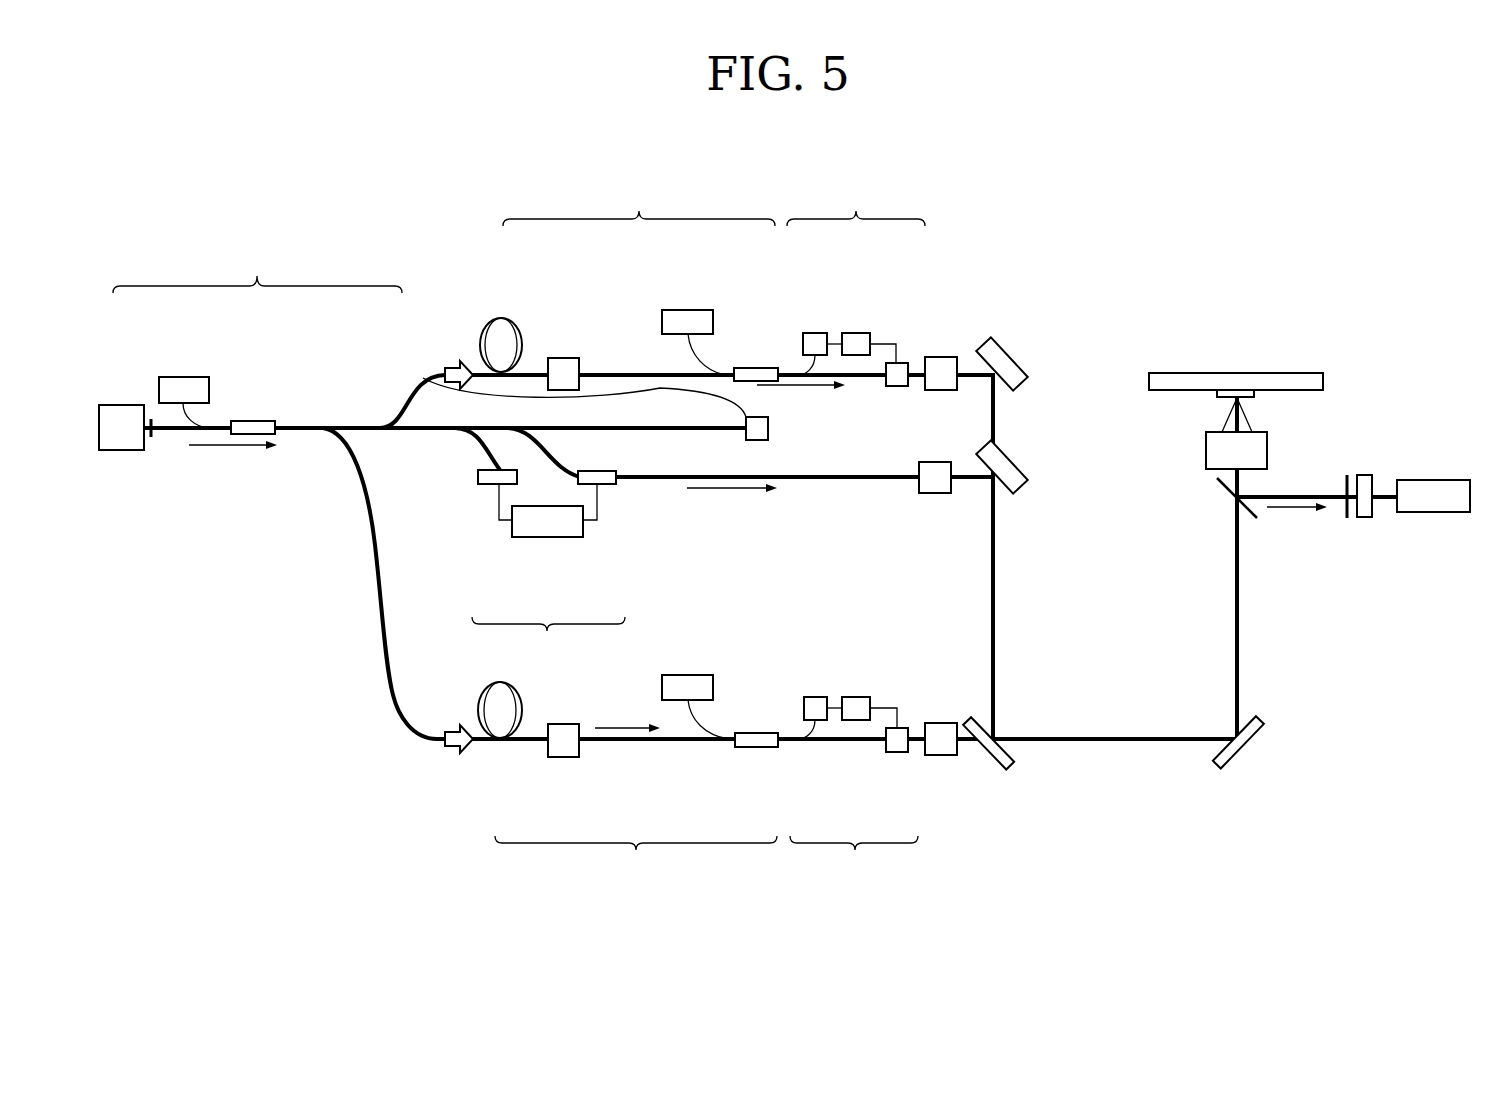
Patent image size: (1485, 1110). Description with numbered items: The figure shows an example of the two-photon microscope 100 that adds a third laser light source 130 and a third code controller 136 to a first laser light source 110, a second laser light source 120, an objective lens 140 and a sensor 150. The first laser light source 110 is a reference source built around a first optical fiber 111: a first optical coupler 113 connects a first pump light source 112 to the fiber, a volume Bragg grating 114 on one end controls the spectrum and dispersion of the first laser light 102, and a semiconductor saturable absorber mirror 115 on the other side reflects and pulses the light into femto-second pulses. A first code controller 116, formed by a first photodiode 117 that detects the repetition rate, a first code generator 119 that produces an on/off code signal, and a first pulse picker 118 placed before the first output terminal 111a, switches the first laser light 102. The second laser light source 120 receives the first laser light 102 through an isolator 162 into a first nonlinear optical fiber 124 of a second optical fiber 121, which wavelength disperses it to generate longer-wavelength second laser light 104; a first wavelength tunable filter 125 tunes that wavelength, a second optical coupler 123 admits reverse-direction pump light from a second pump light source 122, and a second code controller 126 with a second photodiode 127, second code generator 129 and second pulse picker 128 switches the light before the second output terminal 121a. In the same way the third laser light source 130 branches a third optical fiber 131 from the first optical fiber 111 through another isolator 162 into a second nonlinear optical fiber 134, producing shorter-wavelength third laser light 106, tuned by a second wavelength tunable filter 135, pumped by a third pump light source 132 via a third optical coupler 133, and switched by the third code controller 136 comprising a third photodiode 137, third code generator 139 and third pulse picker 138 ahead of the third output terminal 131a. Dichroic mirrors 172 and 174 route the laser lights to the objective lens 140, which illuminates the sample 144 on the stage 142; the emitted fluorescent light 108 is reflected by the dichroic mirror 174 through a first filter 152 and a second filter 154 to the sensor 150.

The two-photon microscope 100 is at (1348, 178).
The first laser light 102 is at (483, 481).
The second laser light 104 is at (801, 399).
The third laser light 106 is at (627, 715).
The fluorescent light 108 is at (1297, 521).
The first laser light source 110 is at (257, 271).
The first optical fiber 111 is at (298, 426).
The first output terminal 111a is at (933, 494).
The first pump light source 112 is at (183, 377).
The first optical coupler 113 is at (253, 421).
The volume Bragg grating 114 is at (122, 405).
The semiconductor saturable absorber mirror 115 is at (423, 377).
The first code controller 116 is at (548, 639).
The first photodiode 117 is at (480, 485).
The first pulse picker 118 is at (602, 485).
The first code generator 119 is at (545, 538).
The second laser light source 120 is at (639, 203).
The second optical fiber 121 is at (616, 374).
The second output terminal 121a is at (940, 357).
The second pump light source 122 is at (687, 310).
The second optical coupler 123 is at (752, 368).
The first nonlinear optical fiber 124 is at (504, 318).
The first wavelength tunable filter 125 is at (563, 358).
The second code controller 126 is at (856, 203).
The second photodiode 127 is at (812, 333).
The second pulse picker 128 is at (905, 363).
The second code generator 129 is at (853, 333).
The third laser light source 130 is at (636, 857).
The third optical fiber 131 is at (622, 742).
The third output terminal 131a is at (940, 723).
The third pump light source 132 is at (673, 701).
The third optical coupler 133 is at (753, 748).
The second nonlinear optical fiber 134 is at (523, 732).
The second wavelength tunable filter 135 is at (560, 758).
The third code controller 136 is at (854, 857).
The third photodiode 137 is at (823, 721).
The third pulse picker 138 is at (893, 753).
The third code generator 139 is at (850, 721).
The objective lens 140 is at (1268, 448).
The stage 142 is at (1235, 373).
The sample 144 is at (1256, 393).
The sensor 150 is at (1432, 480).
The first filter 152 is at (1345, 509).
The second filter 154 is at (1373, 509).
The isolator 162 is at (452, 363).
The dichroic mirror 172 is at (1013, 356).
The dichroic mirror 174 is at (1222, 487).